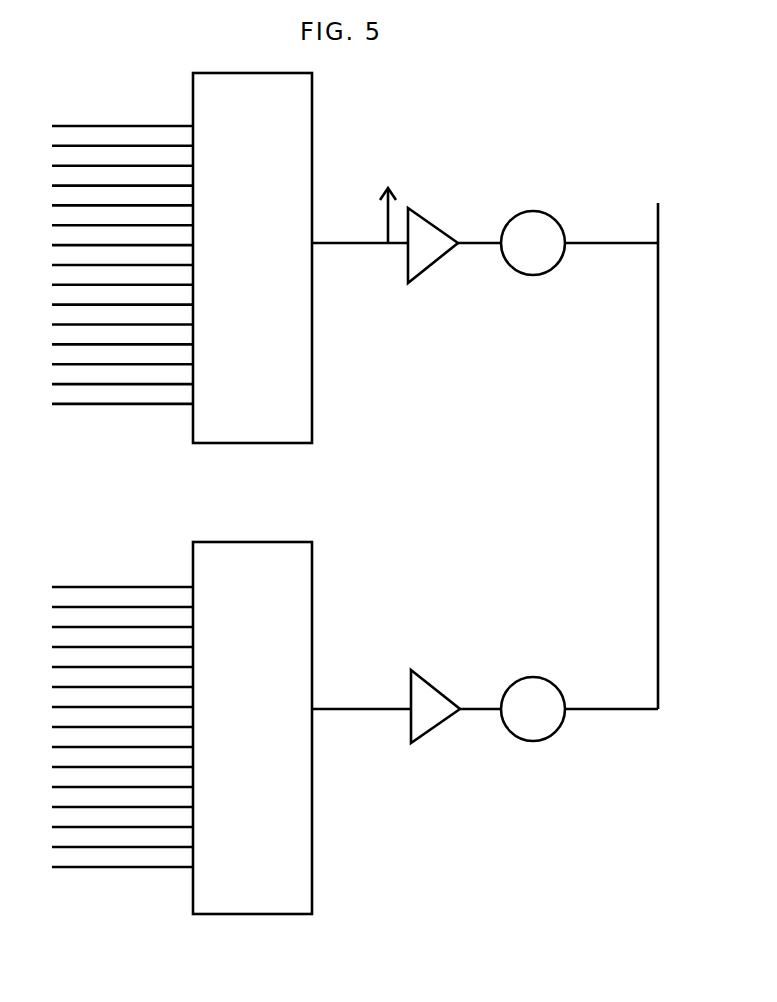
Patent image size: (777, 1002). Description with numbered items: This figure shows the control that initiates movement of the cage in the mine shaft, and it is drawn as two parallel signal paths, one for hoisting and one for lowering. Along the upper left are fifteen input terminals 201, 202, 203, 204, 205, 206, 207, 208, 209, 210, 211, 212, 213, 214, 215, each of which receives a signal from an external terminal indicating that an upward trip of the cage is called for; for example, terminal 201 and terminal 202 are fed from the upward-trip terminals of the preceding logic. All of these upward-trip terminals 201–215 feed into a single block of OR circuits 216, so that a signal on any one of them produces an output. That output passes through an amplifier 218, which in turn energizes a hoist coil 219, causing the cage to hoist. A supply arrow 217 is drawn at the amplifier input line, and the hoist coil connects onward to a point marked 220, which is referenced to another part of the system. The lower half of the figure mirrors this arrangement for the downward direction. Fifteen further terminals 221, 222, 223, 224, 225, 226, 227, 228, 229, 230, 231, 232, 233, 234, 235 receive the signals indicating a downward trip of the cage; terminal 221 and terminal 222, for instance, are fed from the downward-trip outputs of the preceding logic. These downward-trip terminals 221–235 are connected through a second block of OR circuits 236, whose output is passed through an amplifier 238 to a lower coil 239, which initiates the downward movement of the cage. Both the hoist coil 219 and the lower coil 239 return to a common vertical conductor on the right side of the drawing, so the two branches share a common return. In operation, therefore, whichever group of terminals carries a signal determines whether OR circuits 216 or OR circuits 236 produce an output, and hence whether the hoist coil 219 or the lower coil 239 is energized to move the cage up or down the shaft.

The terminal 201 is at (54, 125).
The terminal 202 is at (54, 145).
The terminal 203 is at (54, 165).
The terminal 204 is at (54, 185).
The terminal 205 is at (54, 204).
The terminal 206 is at (54, 224).
The terminal 207 is at (54, 244).
The terminal 208 is at (54, 264).
The terminal 209 is at (54, 284).
The terminal 210 is at (54, 304).
The terminal 211 is at (54, 324).
The terminal 212 is at (54, 343).
The terminal 213 is at (54, 363).
The terminal 214 is at (54, 383).
The terminal 215 is at (54, 403).
The OR circuits 216 is at (312, 112).
The power supply arrow 217 is at (395, 208).
The amplifier 218 is at (472, 230).
The hoist coil 219 is at (557, 268).
The hoist relay contacts (FIG. 8) 220 is at (556, 196).
The terminal 221 is at (54, 586).
The terminal 222 is at (54, 606).
The terminal 223 is at (54, 626).
The terminal 224 is at (54, 646).
The terminal 225 is at (54, 666).
The terminal 226 is at (54, 686).
The terminal 227 is at (54, 706).
The terminal 228 is at (54, 726).
The terminal 229 is at (54, 746).
The terminal 230 is at (54, 766).
The terminal 231 is at (54, 786).
The terminal 232 is at (54, 806).
The terminal 233 is at (54, 826).
The terminal 234 is at (54, 846).
The terminal 235 is at (54, 866).
The OR circuits 236 is at (312, 590).
The amplifier 238 is at (458, 705).
The lower coil 239 is at (591, 721).